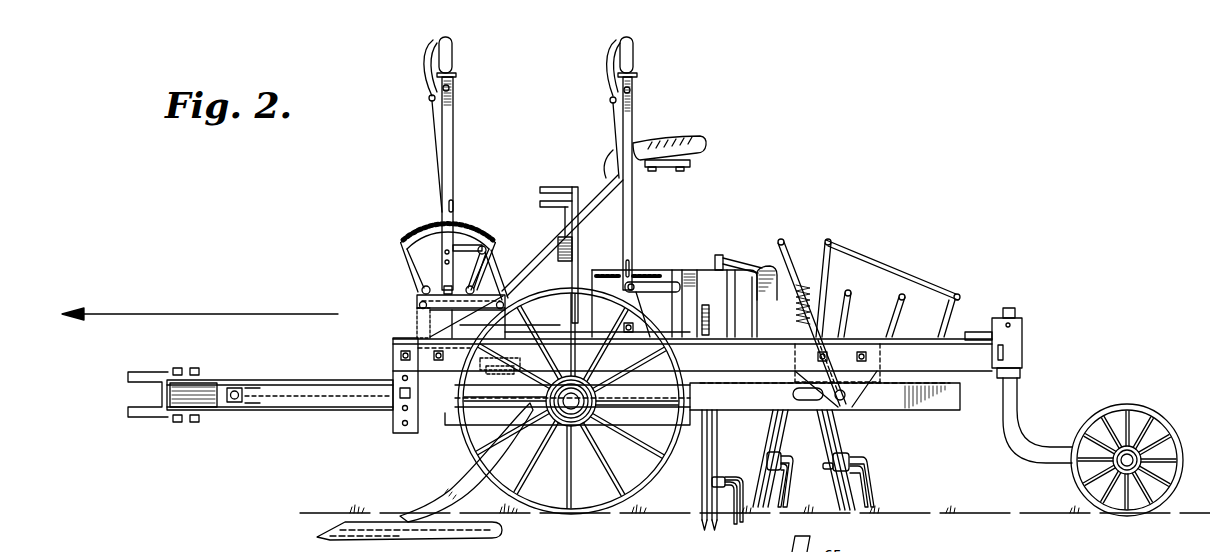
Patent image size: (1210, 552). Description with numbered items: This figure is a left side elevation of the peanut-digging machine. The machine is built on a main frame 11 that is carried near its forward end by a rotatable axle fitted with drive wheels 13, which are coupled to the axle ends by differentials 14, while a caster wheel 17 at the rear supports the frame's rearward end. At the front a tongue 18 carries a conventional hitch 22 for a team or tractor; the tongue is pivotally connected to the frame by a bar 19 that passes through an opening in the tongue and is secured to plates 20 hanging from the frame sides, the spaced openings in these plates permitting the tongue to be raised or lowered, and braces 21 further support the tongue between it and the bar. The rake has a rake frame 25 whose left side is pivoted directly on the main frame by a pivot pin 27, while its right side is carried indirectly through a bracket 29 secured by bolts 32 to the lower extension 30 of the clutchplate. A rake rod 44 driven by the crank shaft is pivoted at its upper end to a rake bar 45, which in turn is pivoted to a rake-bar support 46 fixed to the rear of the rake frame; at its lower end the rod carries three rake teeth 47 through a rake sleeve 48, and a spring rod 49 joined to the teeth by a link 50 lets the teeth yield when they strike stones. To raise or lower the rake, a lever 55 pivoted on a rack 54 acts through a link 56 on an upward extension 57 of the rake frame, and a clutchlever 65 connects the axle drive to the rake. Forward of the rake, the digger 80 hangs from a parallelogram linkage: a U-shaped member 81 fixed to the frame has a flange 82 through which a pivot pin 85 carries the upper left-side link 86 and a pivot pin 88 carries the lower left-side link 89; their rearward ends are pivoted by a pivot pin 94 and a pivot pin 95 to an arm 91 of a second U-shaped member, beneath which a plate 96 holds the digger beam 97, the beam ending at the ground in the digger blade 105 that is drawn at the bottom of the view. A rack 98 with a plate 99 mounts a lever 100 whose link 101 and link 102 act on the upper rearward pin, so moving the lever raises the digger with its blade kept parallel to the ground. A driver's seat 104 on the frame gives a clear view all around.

The main frame 11 is at (707, 339).
The drive wheels 13 is at (662, 470).
The differentials 14 is at (603, 386).
The caster wheel 17 is at (1126, 404).
The tongue 18 is at (291, 382).
The bar 19 is at (412, 394).
The plates 20 is at (393, 430).
The braces 21 is at (290, 405).
The hitch 22 is at (153, 372).
The rake frame 25 is at (937, 415).
The pivot pin 27 is at (846, 412).
The bracket 29 is at (448, 424).
The lower extension 30 is at (597, 432).
The bolts 32 is at (566, 437).
The rake rod 44 is at (833, 244).
The rake bar 45 is at (900, 272).
The rake-bar support 46 is at (956, 318).
The rake teeth 47 is at (876, 471).
The rake sleeve 48 is at (848, 457).
The spring rod 49 is at (818, 425).
The link 50 is at (832, 468).
The rack 54 is at (613, 272).
The lever 55 is at (636, 225).
The link 56 is at (657, 278).
The upward extension 57 is at (760, 266).
The clutchlever 65 is at (580, 240).
The digger 80 is at (421, 497).
The U-shaped member 81 is at (410, 316).
The flange 82 is at (417, 318).
The pivot pin 85 is at (418, 302).
The upper left-side link 86 is at (521, 280).
The pivot pin 88 is at (396, 347).
The lower left-side link 89 is at (467, 323).
The arm 91 is at (518, 322).
The pivot pin 94 is at (508, 300).
The pivot pin 95 is at (520, 338).
The plate 96 is at (527, 370).
The beam 97 is at (460, 470).
The rack 98 is at (408, 240).
The plate 99 is at (418, 280).
The lever 100 is at (458, 163).
The link 101 is at (464, 245).
The link 102 is at (490, 258).
The driver's seat 104 is at (693, 134).
The blade 105 is at (422, 540).